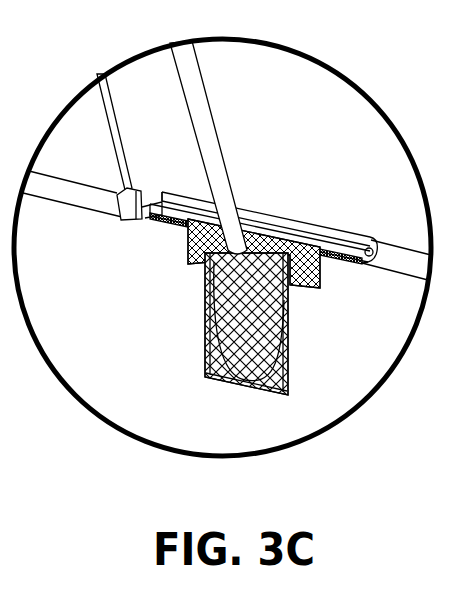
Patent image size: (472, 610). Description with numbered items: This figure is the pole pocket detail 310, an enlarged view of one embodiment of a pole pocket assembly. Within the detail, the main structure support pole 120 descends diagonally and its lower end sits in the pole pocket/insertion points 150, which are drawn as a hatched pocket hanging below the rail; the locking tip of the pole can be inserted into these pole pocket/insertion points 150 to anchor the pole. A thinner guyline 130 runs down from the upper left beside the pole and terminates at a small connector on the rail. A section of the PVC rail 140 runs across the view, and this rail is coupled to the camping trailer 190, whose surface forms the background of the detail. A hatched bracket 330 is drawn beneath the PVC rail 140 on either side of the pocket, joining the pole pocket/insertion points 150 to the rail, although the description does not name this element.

The main structure support pole 120 is at (212, 118).
The guyline 130 is at (103, 117).
The PVC rail 140 is at (310, 220).
The pole pocket/insertion points 150 is at (288, 362).
The camping trailer 190 is at (369, 180).
The pole pocket detail 310 is at (348, 78).
The bracket 330 is at (319, 278).